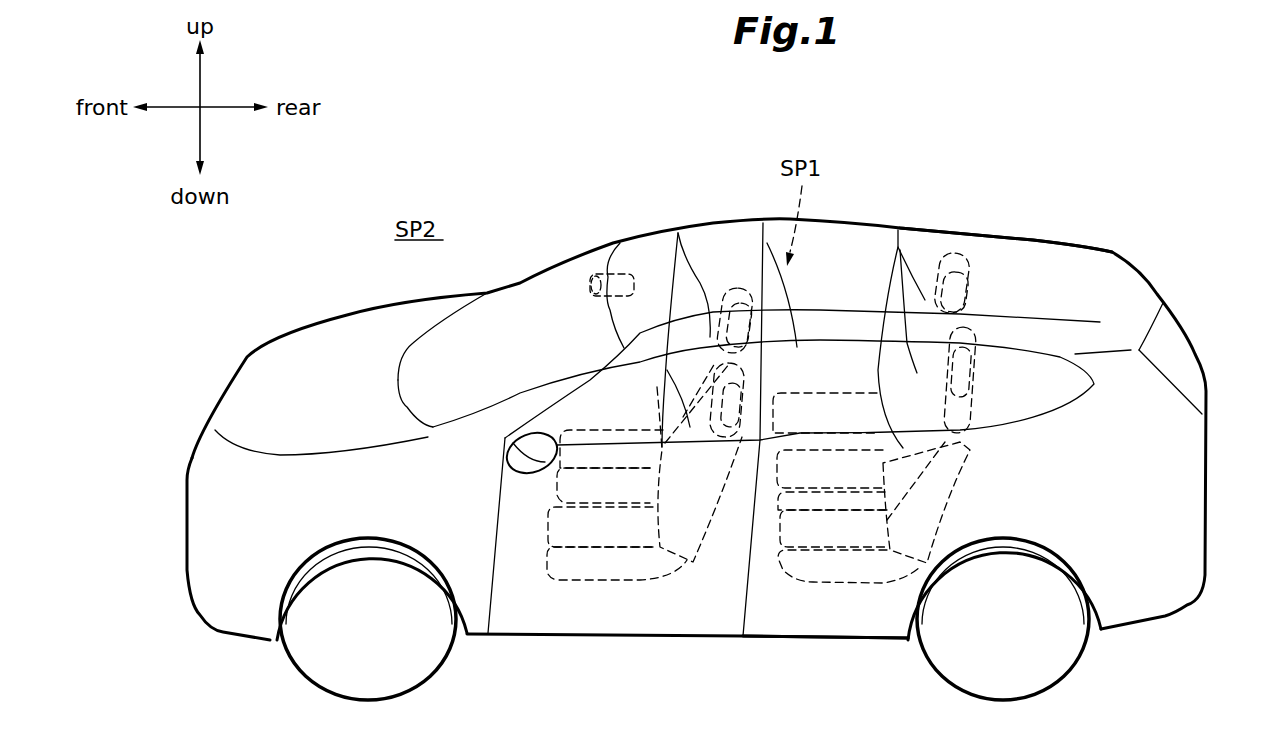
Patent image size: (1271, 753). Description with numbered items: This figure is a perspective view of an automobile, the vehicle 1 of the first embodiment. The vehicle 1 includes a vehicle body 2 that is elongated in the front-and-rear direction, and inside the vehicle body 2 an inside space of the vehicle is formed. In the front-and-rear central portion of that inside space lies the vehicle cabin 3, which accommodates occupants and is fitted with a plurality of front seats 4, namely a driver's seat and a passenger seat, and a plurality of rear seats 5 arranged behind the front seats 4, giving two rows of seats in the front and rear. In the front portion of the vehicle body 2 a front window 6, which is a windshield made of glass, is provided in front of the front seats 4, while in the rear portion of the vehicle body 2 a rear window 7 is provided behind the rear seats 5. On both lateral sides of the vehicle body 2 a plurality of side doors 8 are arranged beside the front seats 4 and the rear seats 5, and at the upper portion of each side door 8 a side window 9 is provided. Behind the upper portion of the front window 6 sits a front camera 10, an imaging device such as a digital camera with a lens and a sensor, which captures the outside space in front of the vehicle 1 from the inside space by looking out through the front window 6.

The vehicle 1 is at (502, 178).
The vehicle body 2 is at (1035, 246).
The vehicle cabin 3 is at (716, 582).
The front seats 4 is at (678, 233).
The rear seats 5 is at (898, 230).
The front window 6 is at (548, 313).
The rear window 7 is at (1184, 352).
The side doors 8 is at (785, 623).
The side window 9 is at (763, 223).
The front camera 10 is at (605, 270).